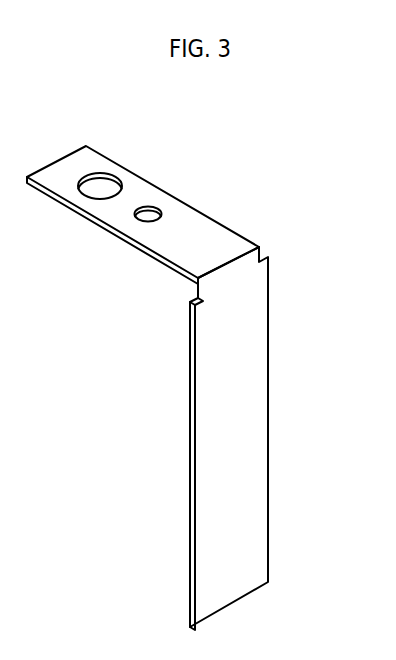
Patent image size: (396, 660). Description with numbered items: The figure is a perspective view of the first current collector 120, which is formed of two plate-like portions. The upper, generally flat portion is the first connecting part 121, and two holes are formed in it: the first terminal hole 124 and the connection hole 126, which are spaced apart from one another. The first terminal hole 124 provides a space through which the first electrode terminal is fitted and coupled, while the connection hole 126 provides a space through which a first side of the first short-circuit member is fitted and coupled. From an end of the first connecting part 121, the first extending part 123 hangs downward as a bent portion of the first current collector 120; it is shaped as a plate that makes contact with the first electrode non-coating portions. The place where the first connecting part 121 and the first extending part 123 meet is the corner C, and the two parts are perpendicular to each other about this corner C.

The first current collector 120 is at (321, 185).
The first connecting part 121 is at (229, 243).
The first extending part 123 is at (257, 373).
The first terminal hole 124 is at (150, 209).
The connection hole 126 is at (97, 189).
The corner C is at (230, 263).